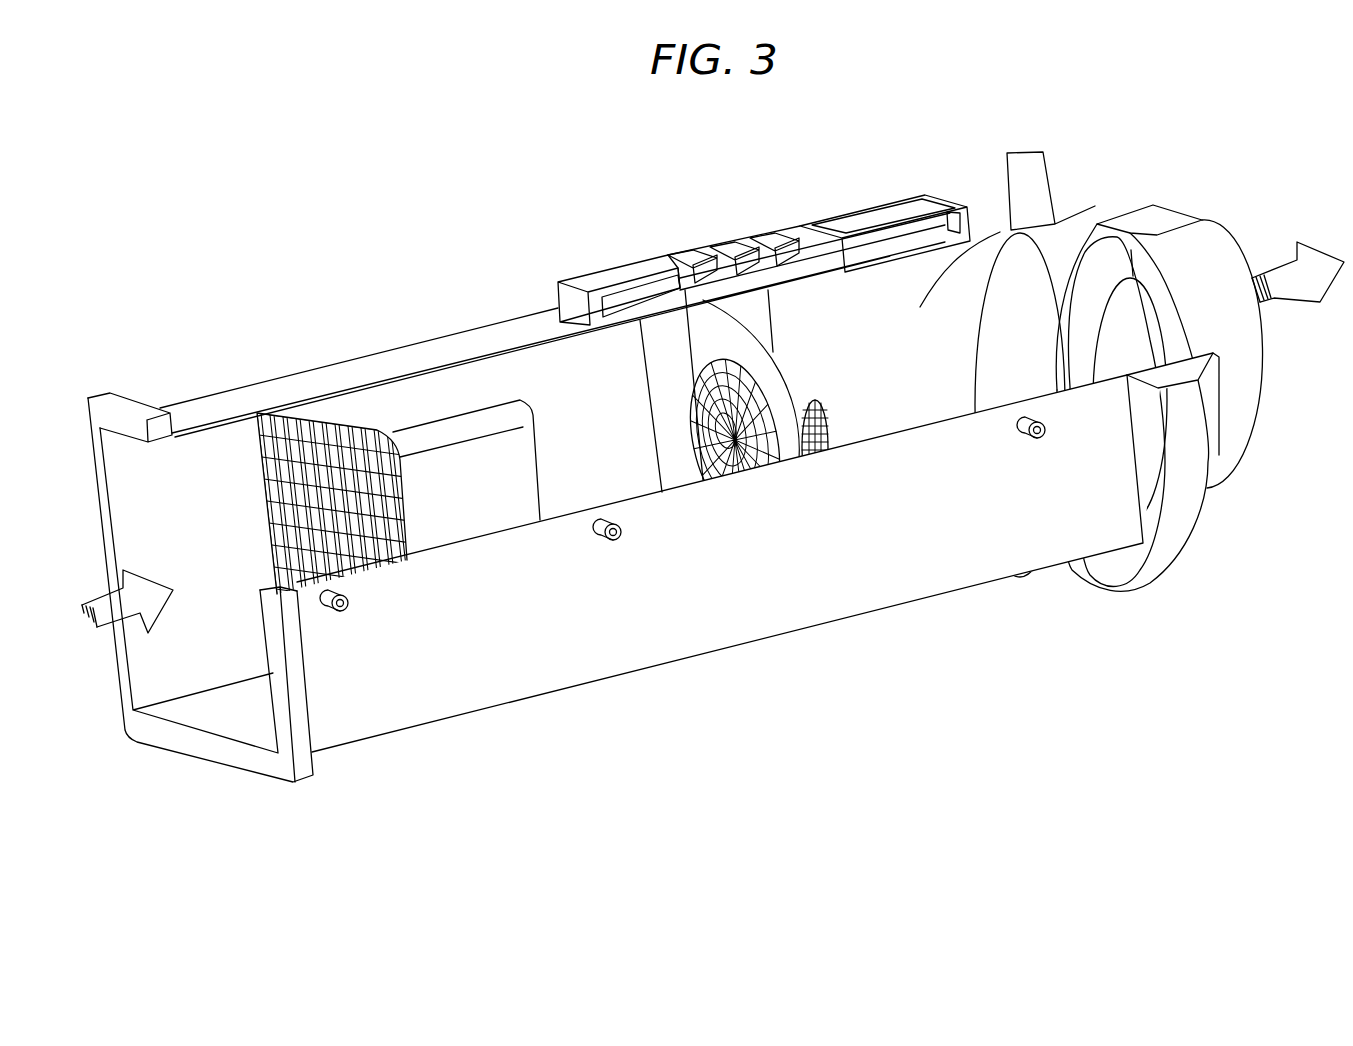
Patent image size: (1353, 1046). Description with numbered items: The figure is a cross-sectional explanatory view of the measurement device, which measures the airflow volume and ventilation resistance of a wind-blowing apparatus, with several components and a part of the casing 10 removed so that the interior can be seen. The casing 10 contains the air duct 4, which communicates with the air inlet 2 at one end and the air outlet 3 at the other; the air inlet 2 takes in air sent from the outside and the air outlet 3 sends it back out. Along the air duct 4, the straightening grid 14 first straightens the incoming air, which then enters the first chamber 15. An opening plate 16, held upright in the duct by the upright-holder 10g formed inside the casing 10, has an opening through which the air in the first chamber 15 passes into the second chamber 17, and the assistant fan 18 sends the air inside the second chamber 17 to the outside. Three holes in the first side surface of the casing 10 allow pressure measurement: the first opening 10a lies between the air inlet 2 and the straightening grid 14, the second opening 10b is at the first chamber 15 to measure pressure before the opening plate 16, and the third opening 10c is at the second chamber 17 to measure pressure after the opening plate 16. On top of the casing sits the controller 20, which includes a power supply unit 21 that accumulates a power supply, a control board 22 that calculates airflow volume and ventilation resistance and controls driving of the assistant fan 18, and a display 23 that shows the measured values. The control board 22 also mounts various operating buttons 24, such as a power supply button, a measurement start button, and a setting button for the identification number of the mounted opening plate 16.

The air inlet 2 is at (232, 702).
The air outlet 3 is at (1035, 257).
The air duct 4 is at (233, 466).
The casing 10 is at (475, 637).
The first opening 10a is at (341, 614).
The second opening 10b is at (616, 543).
The third opening 10c is at (1038, 441).
The upright-holder 10g is at (671, 384).
The straightening grid 14 is at (395, 399).
The first chamber 15 is at (530, 363).
The opening plate 16 is at (798, 447).
The second chamber 17 is at (983, 395).
The assistant fan 18 is at (1157, 222).
The controller 20 is at (628, 262).
The power supply unit 21 is at (632, 276).
The control board 22 is at (650, 298).
The display 23 is at (827, 240).
The operating buttons 24 is at (753, 236).